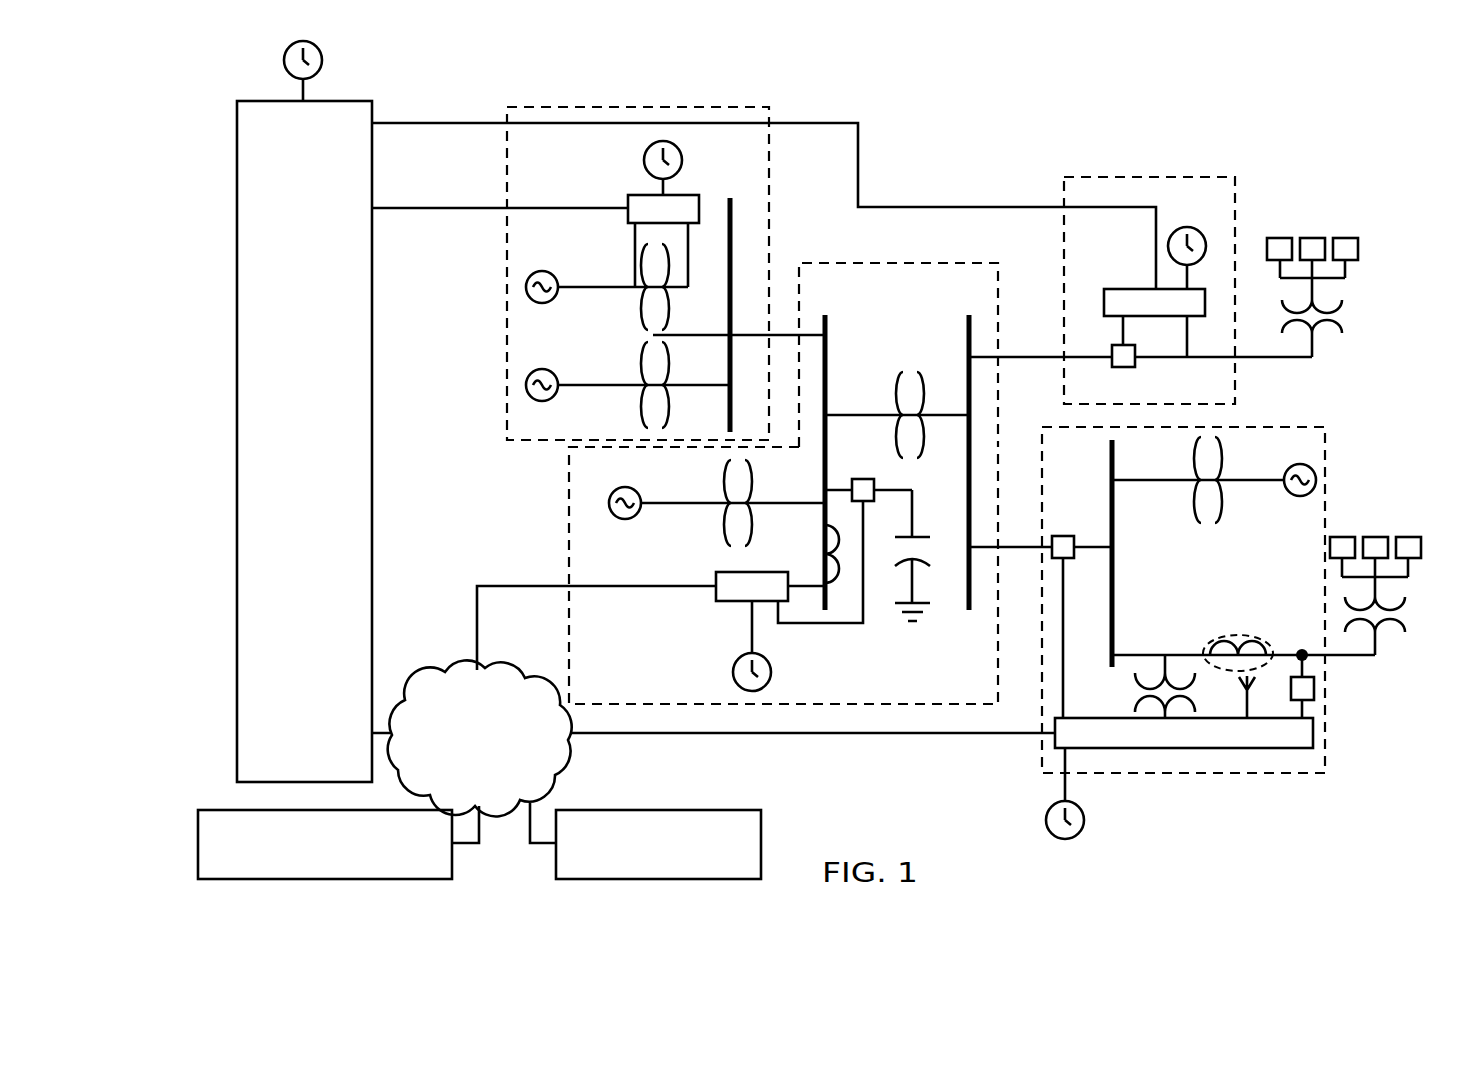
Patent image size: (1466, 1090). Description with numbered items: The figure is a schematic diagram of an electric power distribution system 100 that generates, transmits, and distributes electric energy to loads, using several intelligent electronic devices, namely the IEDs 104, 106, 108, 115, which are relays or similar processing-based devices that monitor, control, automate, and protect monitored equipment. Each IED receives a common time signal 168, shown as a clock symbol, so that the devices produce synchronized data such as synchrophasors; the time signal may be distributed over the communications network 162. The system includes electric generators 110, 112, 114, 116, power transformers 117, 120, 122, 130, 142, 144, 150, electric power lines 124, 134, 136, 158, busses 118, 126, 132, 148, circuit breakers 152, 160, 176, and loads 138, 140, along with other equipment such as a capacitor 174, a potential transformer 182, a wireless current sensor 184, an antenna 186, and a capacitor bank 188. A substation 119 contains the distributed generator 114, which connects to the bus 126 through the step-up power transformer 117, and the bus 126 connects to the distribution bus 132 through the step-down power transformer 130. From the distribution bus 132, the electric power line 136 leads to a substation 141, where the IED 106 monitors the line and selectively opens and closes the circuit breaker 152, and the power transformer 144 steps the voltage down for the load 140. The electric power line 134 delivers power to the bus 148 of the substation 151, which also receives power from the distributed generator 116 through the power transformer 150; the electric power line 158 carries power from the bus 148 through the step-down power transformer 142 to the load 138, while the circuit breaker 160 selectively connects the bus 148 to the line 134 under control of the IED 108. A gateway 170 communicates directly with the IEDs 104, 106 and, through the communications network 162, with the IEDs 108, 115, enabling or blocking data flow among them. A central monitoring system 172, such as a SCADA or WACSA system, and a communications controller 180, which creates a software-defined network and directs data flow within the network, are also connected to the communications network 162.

The electric power distribution system 100 is at (1320, 91).
The IED 104 is at (636, 195).
The IED 106 is at (1118, 288).
The IED 108 is at (1240, 748).
The electric generator 110 is at (534, 272).
The electric generator 112 is at (534, 371).
The electric generator 114 is at (627, 488).
The IED 115 is at (757, 572).
The electric generator 116 is at (1290, 495).
The power transformer 117 is at (728, 536).
The bus 118 is at (733, 203).
The substation 119 is at (568, 540).
The power transformer 120 is at (641, 320).
The power transformer 122 is at (641, 415).
The electric power line 124 is at (783, 333).
The bus 126 is at (827, 345).
The power transformer 130 is at (905, 373).
The distribution bus 132 is at (965, 592).
The electric power line 134 is at (1010, 548).
The electric power line 136 is at (1090, 358).
The load 138 is at (1375, 535).
The load 140 is at (1345, 236).
The substation 141 is at (1086, 176).
The power transformer 142 is at (1402, 627).
The power transformer 144 is at (1332, 313).
The bus 148 is at (1110, 446).
The power transformer 150 is at (1208, 437).
The substation 151 is at (1300, 773).
The circuit breaker 152 is at (1125, 368).
The electric power line 158 is at (1350, 657).
The circuit breaker 160 is at (1075, 538).
The communications network 162 is at (432, 680).
The common time signal 168 is at (323, 62).
The gateway 170 is at (372, 440).
The central monitoring system 172 is at (198, 833).
The capacitor 174 is at (927, 540).
The circuit breaker 176 is at (860, 479).
The communications controller 180 is at (645, 810).
The potential transformer 182 is at (1138, 690).
The wireless current sensor 184 is at (1238, 636).
The antenna 186 is at (1257, 685).
The capacitor bank 188 is at (1315, 688).